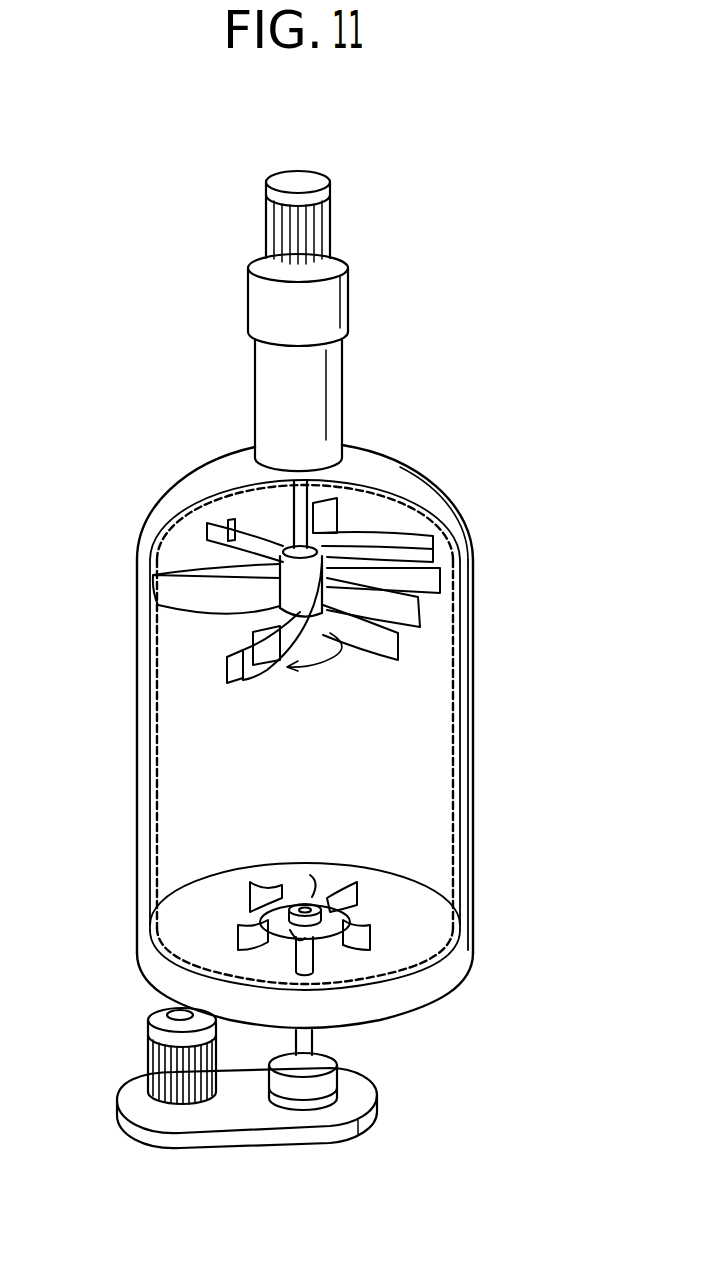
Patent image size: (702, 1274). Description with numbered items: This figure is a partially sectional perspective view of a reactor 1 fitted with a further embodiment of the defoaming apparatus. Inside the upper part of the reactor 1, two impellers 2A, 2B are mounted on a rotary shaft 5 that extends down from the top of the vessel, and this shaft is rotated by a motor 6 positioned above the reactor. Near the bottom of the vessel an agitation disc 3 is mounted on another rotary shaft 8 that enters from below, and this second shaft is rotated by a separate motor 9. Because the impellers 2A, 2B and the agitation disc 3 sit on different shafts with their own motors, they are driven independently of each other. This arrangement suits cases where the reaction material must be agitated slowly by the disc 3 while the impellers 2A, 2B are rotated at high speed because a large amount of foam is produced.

The vessel 1 is at (473, 690).
The impeller 2A is at (435, 588).
The impeller 2B is at (433, 538).
The agitation disc 3 is at (318, 958).
The rotary shaft 5 is at (302, 507).
The motor 6 is at (333, 215).
The rotary shaft 8 is at (325, 928).
The motor 9 is at (160, 1060).